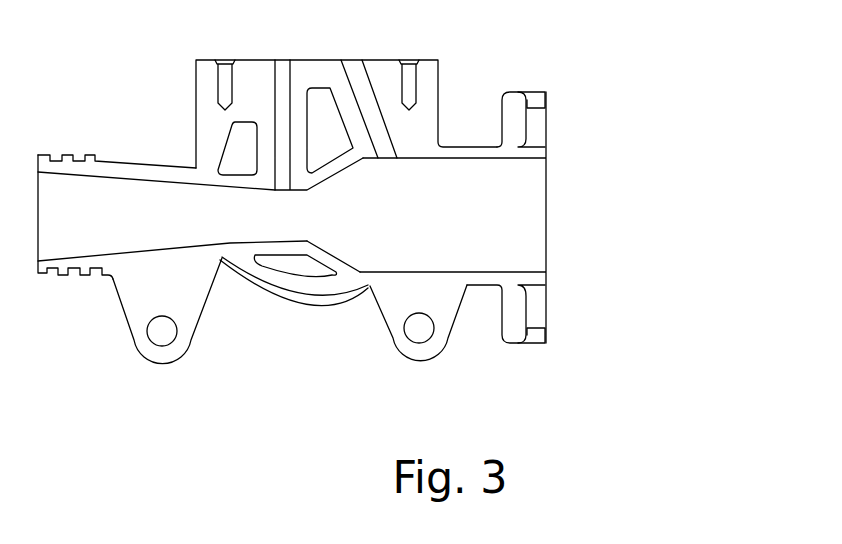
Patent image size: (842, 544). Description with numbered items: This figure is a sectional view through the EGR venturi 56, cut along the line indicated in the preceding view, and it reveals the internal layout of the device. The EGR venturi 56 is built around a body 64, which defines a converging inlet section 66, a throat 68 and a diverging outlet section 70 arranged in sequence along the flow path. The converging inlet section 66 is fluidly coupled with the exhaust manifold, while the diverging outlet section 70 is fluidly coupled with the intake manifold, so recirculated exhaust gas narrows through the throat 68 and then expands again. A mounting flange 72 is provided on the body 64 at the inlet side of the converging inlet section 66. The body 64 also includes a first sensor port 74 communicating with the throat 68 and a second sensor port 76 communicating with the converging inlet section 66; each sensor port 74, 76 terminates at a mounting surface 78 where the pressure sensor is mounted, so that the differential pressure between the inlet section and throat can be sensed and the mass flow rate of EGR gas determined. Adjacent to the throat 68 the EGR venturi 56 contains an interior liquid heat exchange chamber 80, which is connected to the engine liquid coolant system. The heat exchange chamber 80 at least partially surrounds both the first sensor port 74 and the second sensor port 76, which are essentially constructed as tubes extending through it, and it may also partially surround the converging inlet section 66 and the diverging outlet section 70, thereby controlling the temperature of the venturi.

The EGR venturi 56 is at (567, 187).
The body 64 is at (448, 300).
The converging inlet section 66 is at (328, 255).
The throat 68 is at (285, 240).
The diverging outlet section 70 is at (190, 184).
The mounting flange 72 is at (536, 287).
The first sensor port 74 is at (287, 115).
The second sensor port 76 is at (387, 133).
The mounting surface 78 is at (380, 60).
The interior liquid heat exchange chamber 80 is at (325, 115).